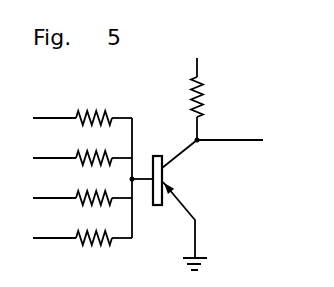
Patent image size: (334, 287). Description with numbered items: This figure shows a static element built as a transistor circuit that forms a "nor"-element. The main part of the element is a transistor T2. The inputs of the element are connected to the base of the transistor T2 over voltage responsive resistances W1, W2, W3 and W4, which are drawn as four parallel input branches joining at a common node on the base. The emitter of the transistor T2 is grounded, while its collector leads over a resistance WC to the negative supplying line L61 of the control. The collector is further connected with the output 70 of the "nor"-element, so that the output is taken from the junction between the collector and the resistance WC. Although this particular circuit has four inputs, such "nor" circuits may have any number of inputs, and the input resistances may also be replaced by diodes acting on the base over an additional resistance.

The voltage responsive resistance W1 is at (75, 116).
The voltage responsive resistance W2 is at (76, 156).
The voltage responsive resistance W3 is at (76, 196).
The voltage responsive resistance W4 is at (76, 236).
The transistor T2 is at (164, 180).
The resistance WC is at (203, 105).
The negative supplying line L61 is at (198, 63).
The output 70 is at (270, 136).